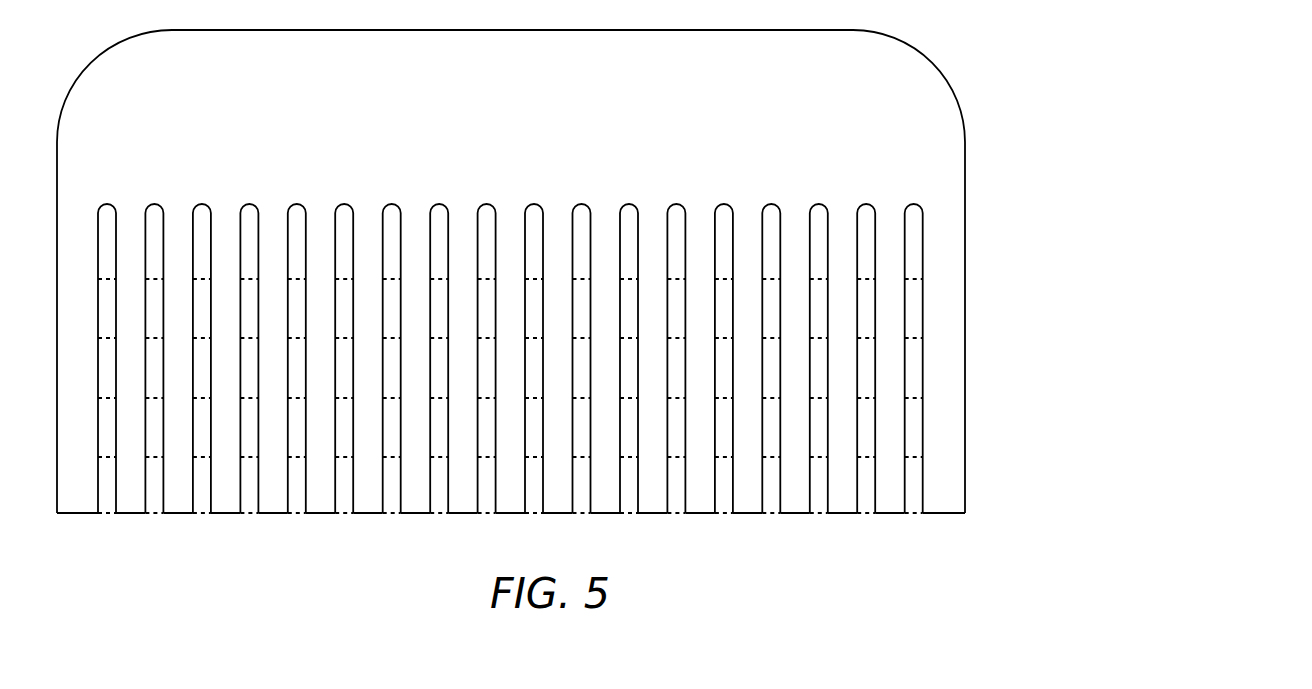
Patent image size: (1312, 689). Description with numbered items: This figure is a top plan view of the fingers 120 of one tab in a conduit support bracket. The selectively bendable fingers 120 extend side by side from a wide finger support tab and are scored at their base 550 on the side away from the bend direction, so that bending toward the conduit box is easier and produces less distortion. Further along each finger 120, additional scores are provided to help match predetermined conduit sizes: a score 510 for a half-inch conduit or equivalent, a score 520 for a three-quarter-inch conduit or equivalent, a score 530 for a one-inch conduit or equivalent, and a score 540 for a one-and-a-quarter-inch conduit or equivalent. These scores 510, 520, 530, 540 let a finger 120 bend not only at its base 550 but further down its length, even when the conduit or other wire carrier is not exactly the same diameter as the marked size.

The fingers 120 is at (733, 210).
The score 510 is at (937, 279).
The score 520 is at (937, 338).
The score 530 is at (937, 398).
The score 540 is at (937, 457).
The base 550 is at (937, 513).